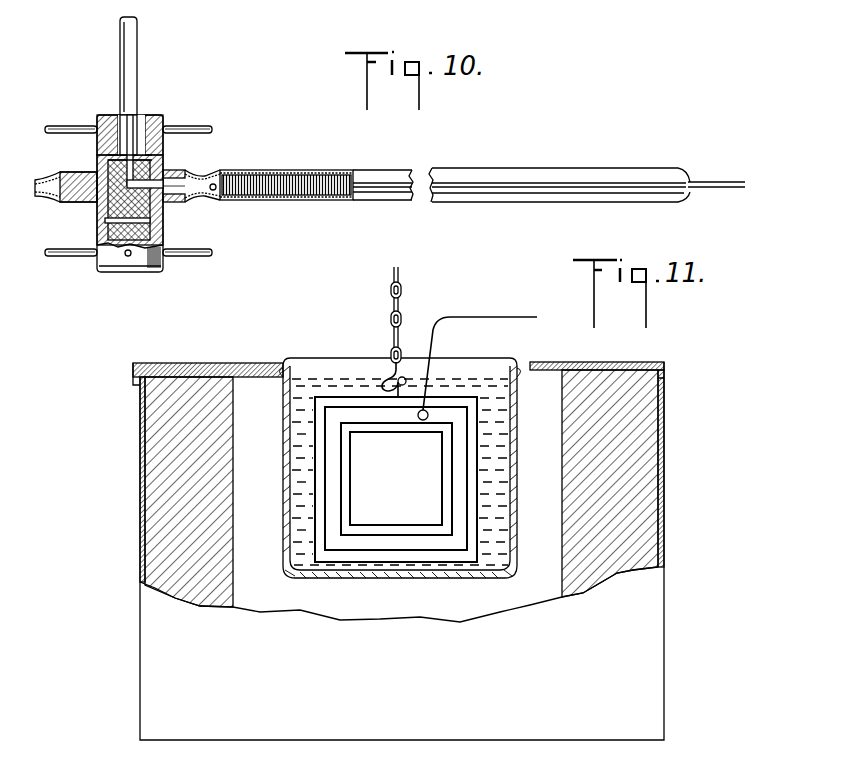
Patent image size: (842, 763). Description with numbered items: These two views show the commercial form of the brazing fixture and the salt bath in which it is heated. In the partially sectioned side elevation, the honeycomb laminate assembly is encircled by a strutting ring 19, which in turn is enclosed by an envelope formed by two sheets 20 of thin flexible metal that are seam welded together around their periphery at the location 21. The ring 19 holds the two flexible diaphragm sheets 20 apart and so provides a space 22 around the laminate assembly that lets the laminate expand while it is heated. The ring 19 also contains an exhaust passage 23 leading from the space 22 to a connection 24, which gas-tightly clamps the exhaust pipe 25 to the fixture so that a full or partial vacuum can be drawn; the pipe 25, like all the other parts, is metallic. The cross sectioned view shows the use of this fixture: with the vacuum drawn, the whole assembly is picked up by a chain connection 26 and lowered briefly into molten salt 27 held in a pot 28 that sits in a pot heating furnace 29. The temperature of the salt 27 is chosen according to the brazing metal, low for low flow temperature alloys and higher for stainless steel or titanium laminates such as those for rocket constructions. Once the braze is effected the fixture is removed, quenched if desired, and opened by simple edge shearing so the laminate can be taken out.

In FIG. 10, the strutting ring 19 is at (168, 175).
In FIG. 10, the sheets of thin flexible metal 20 is at (400, 173).
In FIG. 10, the seam weld location 21 is at (742, 183).
In FIG. 10, the space 22 is at (202, 193).
In FIG. 10, the exhaust passage 23 is at (168, 195).
In FIG. 10, the connection 24 is at (150, 117).
In FIG. 10, the exhaust pipe 25 is at (137, 50).
In FIG. 11, the chain connection 26 is at (400, 299).
In FIG. 11, the molten salt 27 is at (477, 460).
In FIG. 11, the pot 28 is at (285, 468).
In FIG. 11, the pot heating furnace 29 is at (217, 563).